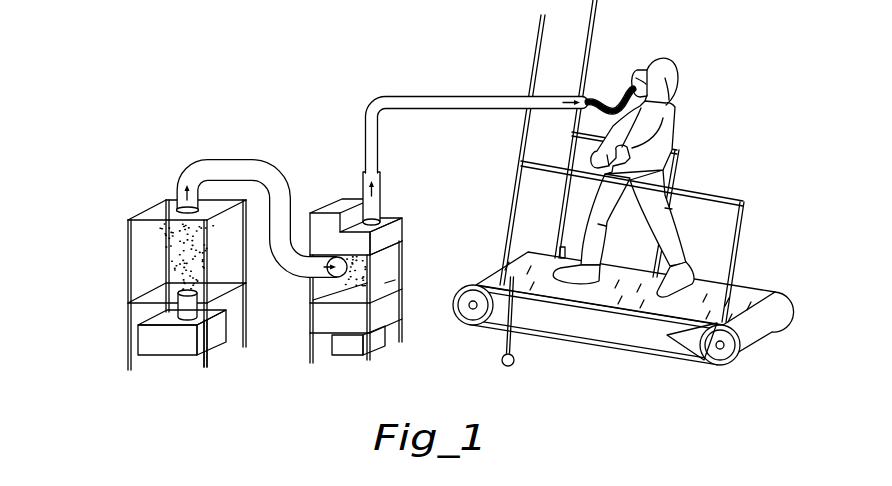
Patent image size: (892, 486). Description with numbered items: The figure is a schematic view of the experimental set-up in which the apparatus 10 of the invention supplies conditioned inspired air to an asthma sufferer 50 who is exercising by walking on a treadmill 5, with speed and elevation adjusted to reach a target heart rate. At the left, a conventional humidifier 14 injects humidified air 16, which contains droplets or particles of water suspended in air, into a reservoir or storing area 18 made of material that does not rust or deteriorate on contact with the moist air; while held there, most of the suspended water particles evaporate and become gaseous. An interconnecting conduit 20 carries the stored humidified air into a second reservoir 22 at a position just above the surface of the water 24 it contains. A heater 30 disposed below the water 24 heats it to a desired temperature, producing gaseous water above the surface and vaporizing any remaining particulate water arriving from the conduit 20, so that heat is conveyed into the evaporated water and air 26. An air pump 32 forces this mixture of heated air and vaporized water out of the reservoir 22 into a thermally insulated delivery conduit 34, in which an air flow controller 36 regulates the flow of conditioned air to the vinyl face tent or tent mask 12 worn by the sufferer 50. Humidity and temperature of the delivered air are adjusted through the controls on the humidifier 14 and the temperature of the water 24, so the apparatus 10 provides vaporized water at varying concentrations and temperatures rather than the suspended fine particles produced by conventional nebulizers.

The treadmill 5 is at (632, 358).
The apparatus 10 is at (304, 114).
The face tent 12 is at (634, 73).
The humidifier 14 is at (183, 350).
The humidified air 16 is at (140, 247).
The reservoir 18 is at (125, 282).
The interconnecting conduit 20 is at (212, 164).
The second reservoir 22 is at (307, 318).
The water 24 is at (383, 320).
The vaporized water 26 is at (388, 270).
The heater 30 is at (350, 349).
The air pump 32 is at (340, 203).
The delivery conduit 34 is at (402, 96).
The air flow controller 36 is at (381, 188).
The asthma sufferer 50 is at (697, 89).